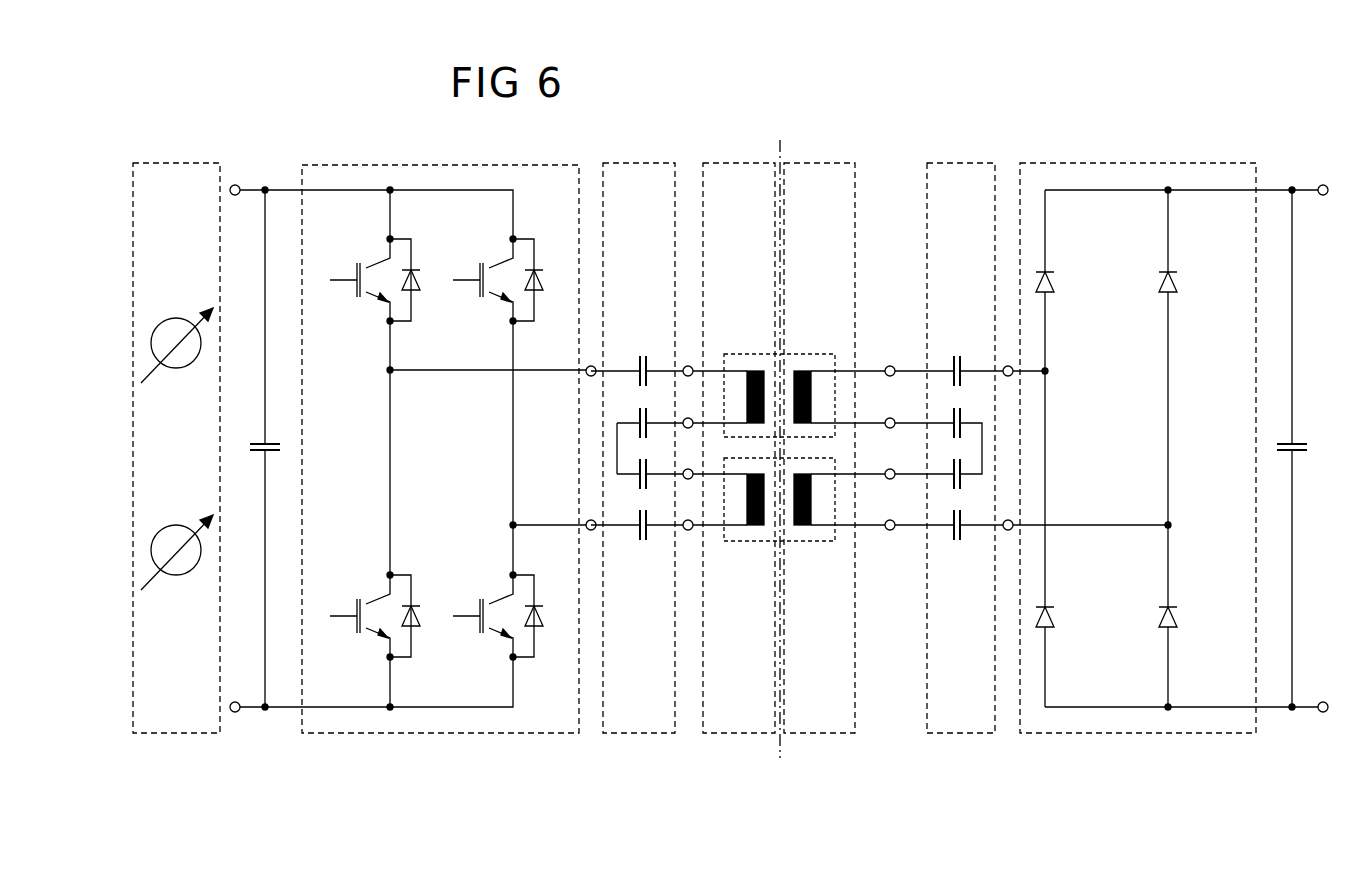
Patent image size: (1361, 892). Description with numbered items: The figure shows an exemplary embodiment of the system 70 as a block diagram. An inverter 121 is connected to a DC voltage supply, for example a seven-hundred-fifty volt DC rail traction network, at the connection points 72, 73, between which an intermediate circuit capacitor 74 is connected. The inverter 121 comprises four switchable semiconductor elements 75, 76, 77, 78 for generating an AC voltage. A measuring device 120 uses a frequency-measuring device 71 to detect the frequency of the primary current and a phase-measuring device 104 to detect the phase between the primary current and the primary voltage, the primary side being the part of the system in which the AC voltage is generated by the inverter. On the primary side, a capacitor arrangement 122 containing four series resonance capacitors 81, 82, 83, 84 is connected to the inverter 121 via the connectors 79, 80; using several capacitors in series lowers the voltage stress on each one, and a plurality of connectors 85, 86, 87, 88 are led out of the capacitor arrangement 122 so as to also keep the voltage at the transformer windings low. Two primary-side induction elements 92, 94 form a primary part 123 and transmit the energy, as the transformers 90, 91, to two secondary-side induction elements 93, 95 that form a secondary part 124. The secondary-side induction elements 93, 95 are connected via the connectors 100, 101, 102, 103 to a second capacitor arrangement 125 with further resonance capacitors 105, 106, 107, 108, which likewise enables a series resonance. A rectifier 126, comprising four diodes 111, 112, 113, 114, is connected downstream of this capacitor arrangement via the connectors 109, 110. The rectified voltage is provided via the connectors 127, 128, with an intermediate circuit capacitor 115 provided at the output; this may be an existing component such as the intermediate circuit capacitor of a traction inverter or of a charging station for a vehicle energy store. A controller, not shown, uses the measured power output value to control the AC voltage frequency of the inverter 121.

The power converter circuit 70 is at (1097, 120).
The frequency-measuring device 71 is at (176, 370).
The connection point 72 is at (235, 712).
The connection point 73 is at (235, 185).
The intermediate circuit capacitor 74 is at (270, 441).
The switchable semiconductor element 75 is at (385, 262).
The switchable semiconductor element 76 is at (385, 598).
The switchable semiconductor element 77 is at (508, 262).
The switchable semiconductor element 78 is at (508, 598).
The connector 79 is at (587, 368).
The connector 80 is at (587, 528).
The resonance capacitor 81 is at (638, 540).
The resonance capacitor 82 is at (637, 475).
The resonance capacitor 83 is at (637, 421).
The resonance capacitor 84 is at (638, 356).
The connector 85 is at (686, 366).
The connector 86 is at (690, 418).
The connector 87 is at (690, 479).
The connector 88 is at (686, 530).
The transformer 90 is at (788, 351).
The transformer 91 is at (787, 545).
The induction element 92 is at (755, 541).
The induction element 93 is at (802, 541).
The induction element 94 is at (755, 354).
The induction element 95 is at (802, 354).
The connector 100 is at (888, 366).
The connector 101 is at (893, 418).
The connector 102 is at (893, 479).
The connector 103 is at (888, 530).
The power measuring device 104 is at (176, 577).
The resonance capacitor 105 is at (957, 356).
The resonance capacitor 106 is at (963, 418).
The resonance capacitor 107 is at (963, 478).
The resonance capacitor 108 is at (957, 540).
The connector 109 is at (1012, 368).
The connector 110 is at (1012, 529).
The diode 111 is at (1052, 282).
The diode 112 is at (1052, 617).
The diode 113 is at (1175, 617).
The diode 114 is at (1175, 282).
The intermediate circuit capacitor 115 is at (1283, 445).
The measuring device 120 is at (172, 735).
The inverter 121 is at (428, 735).
The capacitor arrangement 122 is at (636, 735).
The primary part 123 is at (736, 735).
The secondary part 124 is at (817, 735).
The capacitor arrangement 125 is at (959, 735).
The rectifier 126 is at (1124, 735).
The connector 127 is at (1323, 185).
The connector 128 is at (1323, 712).